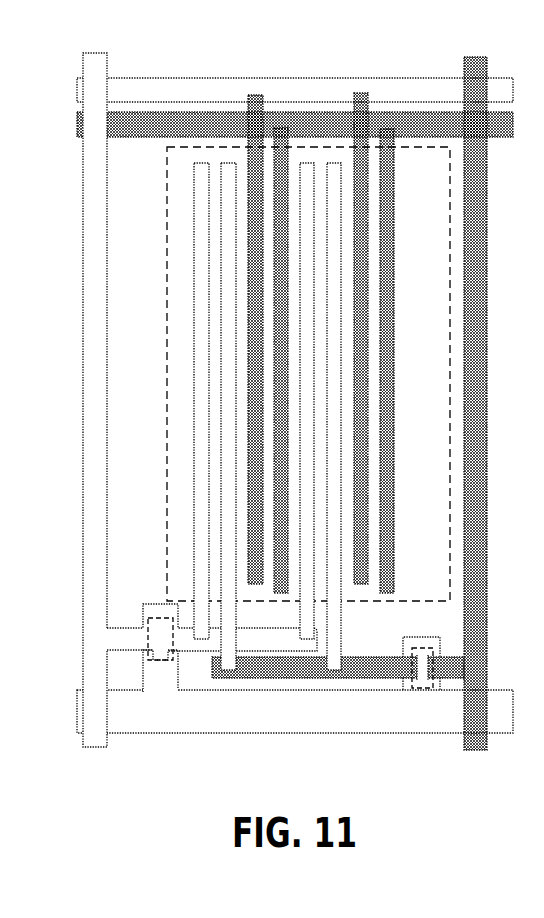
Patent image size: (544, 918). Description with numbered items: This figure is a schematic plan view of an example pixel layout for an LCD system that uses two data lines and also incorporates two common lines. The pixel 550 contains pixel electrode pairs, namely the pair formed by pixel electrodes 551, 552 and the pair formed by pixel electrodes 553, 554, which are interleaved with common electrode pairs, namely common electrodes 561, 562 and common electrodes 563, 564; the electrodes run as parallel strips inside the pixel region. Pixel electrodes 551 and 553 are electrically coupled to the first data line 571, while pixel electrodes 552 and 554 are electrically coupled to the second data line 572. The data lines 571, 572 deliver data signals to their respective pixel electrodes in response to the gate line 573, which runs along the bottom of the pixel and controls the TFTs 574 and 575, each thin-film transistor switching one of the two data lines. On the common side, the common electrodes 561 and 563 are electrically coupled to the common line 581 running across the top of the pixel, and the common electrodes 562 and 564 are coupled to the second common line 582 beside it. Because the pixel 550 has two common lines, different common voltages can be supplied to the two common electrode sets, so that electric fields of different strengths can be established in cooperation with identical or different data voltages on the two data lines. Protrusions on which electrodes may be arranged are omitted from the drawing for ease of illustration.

The pixel 550 is at (435, 589).
The pixel electrode 551 is at (194, 237).
The pixel electrode 552 is at (221, 325).
The pixel electrode 553 is at (314, 246).
The pixel electrode 554 is at (341, 320).
The common electrode 561 is at (248, 412).
The common electrode 562 is at (274, 497).
The common electrode 563 is at (368, 412).
The common electrode 564 is at (395, 492).
The data line 571 is at (107, 577).
The data line 572 is at (488, 577).
The gate line 573 is at (300, 727).
The TFT 574 is at (156, 662).
The TFT 575 is at (418, 692).
The common line 581 is at (193, 86).
The common line 582 is at (301, 114).